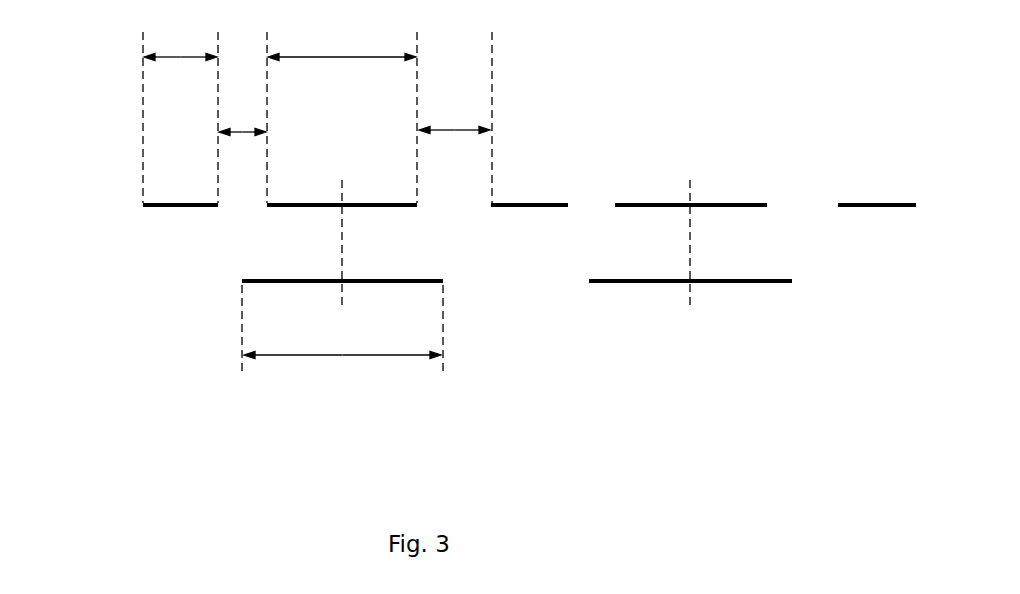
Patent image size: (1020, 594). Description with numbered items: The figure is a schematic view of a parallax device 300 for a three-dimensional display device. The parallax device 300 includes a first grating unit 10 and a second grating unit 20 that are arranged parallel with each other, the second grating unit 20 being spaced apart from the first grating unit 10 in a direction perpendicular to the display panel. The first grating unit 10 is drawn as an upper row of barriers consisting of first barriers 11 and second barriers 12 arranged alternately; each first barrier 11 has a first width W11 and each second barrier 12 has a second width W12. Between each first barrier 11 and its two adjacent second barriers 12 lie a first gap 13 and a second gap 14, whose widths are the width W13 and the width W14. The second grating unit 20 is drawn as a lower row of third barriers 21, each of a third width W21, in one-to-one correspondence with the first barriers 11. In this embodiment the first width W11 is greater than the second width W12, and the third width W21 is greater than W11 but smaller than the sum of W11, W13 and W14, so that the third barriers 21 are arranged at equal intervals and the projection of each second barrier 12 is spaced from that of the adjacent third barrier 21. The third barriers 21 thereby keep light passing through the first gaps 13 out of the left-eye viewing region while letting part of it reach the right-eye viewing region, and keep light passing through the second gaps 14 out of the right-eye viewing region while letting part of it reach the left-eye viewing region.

The first grating unit 10 is at (474, 124).
The first barrier 11 is at (718, 205).
The second barrier 12 is at (878, 205).
The first gap 13 is at (805, 194).
The second gap 14 is at (588, 194).
The second grating unit 20 is at (453, 331).
The third barrier 21 is at (725, 283).
The parallax device 300 is at (474, 255).
The first width W11 is at (342, 49).
The second width W12 is at (180, 49).
The width of the first gap W13 is at (454, 123).
The width of the second gap W14 is at (242, 124).
The third width W21 is at (342, 347).